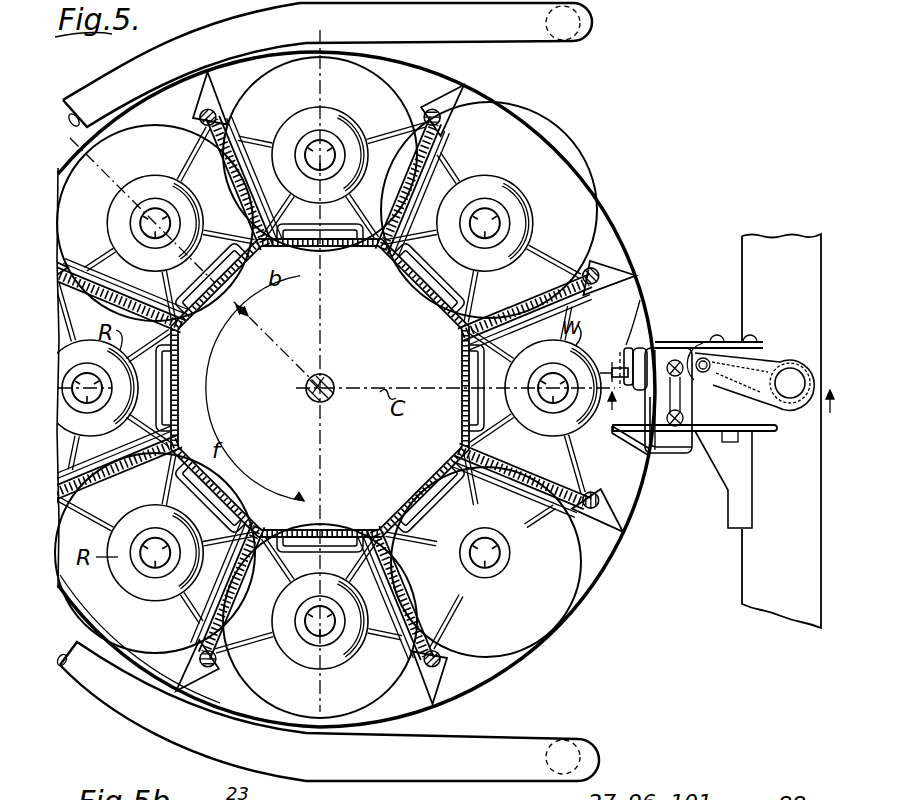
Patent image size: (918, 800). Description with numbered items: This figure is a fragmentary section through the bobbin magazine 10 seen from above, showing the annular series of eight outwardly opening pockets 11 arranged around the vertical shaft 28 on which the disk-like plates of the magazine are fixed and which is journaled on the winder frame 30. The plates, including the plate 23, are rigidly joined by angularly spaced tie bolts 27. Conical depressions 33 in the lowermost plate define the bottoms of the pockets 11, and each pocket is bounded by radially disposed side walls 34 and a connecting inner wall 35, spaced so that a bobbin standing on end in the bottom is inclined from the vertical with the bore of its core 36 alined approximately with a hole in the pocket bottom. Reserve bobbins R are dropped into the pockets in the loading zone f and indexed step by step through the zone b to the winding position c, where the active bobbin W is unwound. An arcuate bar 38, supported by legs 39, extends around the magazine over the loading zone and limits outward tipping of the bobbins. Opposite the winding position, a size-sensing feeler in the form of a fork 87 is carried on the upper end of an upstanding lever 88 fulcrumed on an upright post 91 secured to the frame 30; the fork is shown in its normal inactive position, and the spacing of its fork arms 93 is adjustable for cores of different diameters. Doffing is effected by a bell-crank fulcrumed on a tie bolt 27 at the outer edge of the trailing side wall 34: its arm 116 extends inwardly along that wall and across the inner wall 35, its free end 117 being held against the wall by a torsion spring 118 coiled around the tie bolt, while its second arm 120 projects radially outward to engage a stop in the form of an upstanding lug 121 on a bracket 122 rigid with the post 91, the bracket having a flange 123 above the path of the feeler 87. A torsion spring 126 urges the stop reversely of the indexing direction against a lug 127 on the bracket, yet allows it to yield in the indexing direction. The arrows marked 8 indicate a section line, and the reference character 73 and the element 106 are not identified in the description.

The section line 8- 8 is at (716, 416).
The bobbin magazine 10 is at (570, 142).
The bobbin pockets 11 is at (496, 147).
The plate 23 is at (592, 195).
The tie bolts 27 is at (594, 268).
The vertical shaft 28 is at (333, 376).
The winder frame 30 is at (748, 268).
The conical depressions 33 is at (552, 196).
The side walls 34 is at (515, 314).
The inner wall 35 is at (460, 359).
The bobbin core 36 is at (333, 142).
The arcuate bar 38 is at (490, 33).
The legs 39 is at (566, 40).
The station axis 73 is at (110, 190).
The fork 87 is at (621, 414).
The upstanding lever 88 is at (796, 352).
The upright post 91 is at (703, 412).
The fork arms 93 is at (612, 368).
The bracket housing 106 is at (700, 343).
The bell-crank arm 116 is at (538, 318).
The free end of arm 117 is at (463, 429).
The torsion spring 118 is at (616, 264).
The second bell-crank arm 120 is at (640, 300).
The stop lug 121 is at (646, 352).
The bracket 122 is at (765, 436).
The flange 123 is at (652, 452).
The torsion spring 126 is at (620, 356).
The lug 127 is at (641, 350).